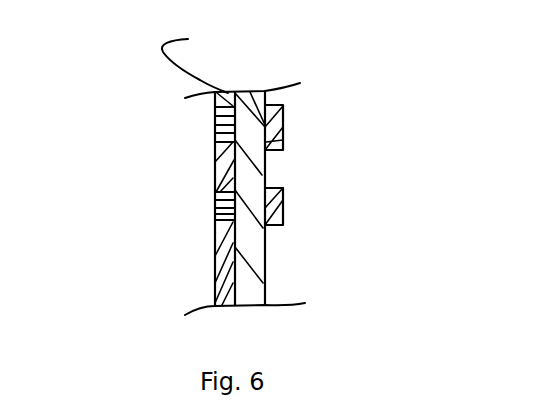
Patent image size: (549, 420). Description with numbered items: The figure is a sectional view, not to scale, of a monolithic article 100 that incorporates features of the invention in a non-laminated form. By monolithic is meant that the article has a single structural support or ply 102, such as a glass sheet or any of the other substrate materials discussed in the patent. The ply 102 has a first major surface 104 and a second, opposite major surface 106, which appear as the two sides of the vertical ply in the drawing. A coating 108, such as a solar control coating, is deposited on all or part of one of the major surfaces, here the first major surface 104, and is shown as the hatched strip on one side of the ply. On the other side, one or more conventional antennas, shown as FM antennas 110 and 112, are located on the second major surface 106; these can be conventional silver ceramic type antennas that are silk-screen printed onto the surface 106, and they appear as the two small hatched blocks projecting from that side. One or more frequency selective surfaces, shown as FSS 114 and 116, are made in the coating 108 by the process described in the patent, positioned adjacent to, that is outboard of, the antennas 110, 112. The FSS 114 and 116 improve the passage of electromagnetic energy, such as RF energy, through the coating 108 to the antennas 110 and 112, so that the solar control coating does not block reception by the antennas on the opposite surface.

The monolithic article 100 is at (386, 82).
The ply 102 is at (250, 92).
The first major surface 104 is at (232, 166).
The second major surface 106 is at (270, 166).
The coating 108 is at (220, 272).
The FM antenna 110 is at (284, 121).
The FM antenna 112 is at (284, 206).
The FSS 114 is at (208, 122).
The FSS 116 is at (205, 209).